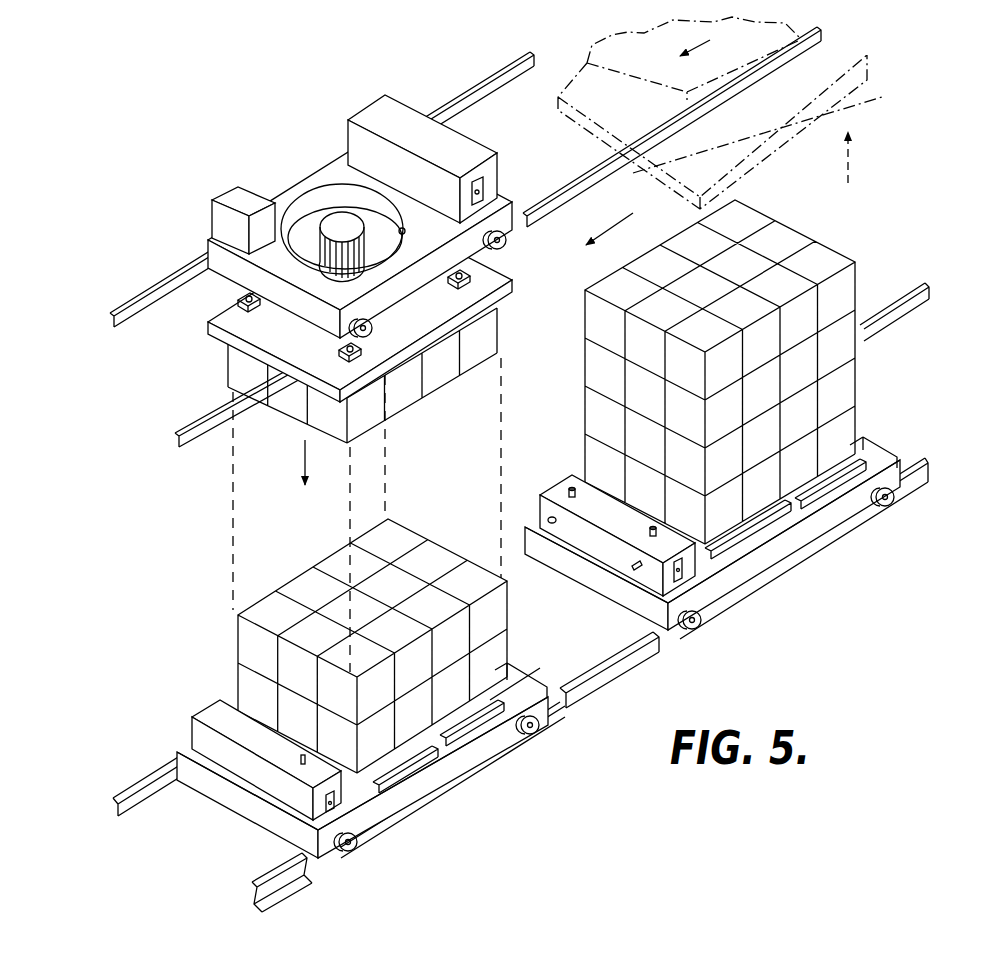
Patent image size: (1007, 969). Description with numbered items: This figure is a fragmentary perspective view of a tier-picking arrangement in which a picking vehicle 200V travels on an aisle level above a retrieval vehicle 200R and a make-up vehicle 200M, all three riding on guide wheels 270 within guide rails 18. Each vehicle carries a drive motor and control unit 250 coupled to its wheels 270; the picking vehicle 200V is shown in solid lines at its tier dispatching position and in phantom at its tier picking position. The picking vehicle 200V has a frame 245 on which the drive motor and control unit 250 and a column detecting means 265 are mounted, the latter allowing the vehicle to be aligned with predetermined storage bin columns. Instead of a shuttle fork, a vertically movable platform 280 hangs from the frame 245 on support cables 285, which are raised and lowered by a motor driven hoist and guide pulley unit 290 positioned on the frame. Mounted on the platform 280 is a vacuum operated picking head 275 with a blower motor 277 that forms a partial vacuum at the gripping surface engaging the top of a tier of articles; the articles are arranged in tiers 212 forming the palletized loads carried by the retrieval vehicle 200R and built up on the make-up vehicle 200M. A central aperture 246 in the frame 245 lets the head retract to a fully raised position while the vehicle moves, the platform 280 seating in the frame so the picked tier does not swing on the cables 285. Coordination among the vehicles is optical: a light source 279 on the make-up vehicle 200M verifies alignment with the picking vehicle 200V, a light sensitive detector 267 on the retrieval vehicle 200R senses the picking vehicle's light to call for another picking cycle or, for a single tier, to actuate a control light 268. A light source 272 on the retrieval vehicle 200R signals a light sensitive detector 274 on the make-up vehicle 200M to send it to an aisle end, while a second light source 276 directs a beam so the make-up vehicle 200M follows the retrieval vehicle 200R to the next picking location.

The guide rails 18 is at (490, 70).
The picking vehicle 200V is at (354, 247).
The make-up vehicle 200M is at (193, 665).
The retrieval vehicle 200R is at (890, 419).
The tiers of articles 212 is at (293, 413).
The frame 245 is at (333, 295).
The central aperture 246 is at (405, 231).
The drive motor and control unit 250 is at (480, 132).
The column detecting means 265 is at (486, 181).
The light sensitive detector 267 is at (573, 496).
The control light 268 is at (650, 532).
The guide wheels 270 is at (506, 243).
The light source 272 is at (556, 522).
The light sensitive detector 274 is at (507, 675).
The vacuum operated picking head 275 is at (310, 221).
The second light source 276 is at (634, 569).
The blower motor 277 is at (347, 223).
The light source 279 is at (300, 760).
The vertically movable platform 280 is at (507, 301).
The support cables 285 is at (246, 293).
The motor driven hoist and guide pulley unit 290 is at (223, 217).